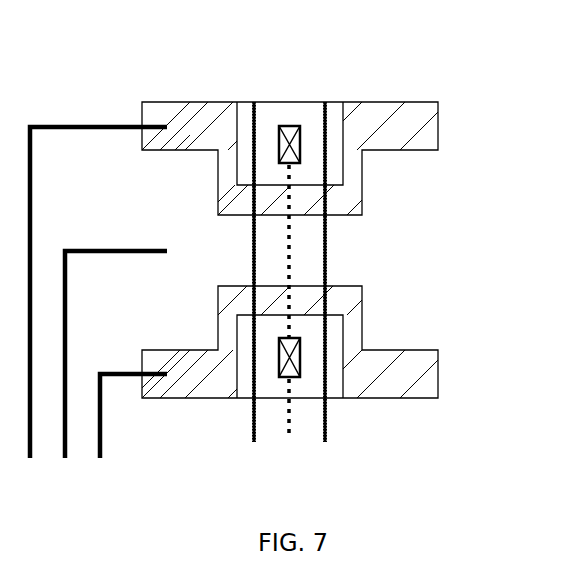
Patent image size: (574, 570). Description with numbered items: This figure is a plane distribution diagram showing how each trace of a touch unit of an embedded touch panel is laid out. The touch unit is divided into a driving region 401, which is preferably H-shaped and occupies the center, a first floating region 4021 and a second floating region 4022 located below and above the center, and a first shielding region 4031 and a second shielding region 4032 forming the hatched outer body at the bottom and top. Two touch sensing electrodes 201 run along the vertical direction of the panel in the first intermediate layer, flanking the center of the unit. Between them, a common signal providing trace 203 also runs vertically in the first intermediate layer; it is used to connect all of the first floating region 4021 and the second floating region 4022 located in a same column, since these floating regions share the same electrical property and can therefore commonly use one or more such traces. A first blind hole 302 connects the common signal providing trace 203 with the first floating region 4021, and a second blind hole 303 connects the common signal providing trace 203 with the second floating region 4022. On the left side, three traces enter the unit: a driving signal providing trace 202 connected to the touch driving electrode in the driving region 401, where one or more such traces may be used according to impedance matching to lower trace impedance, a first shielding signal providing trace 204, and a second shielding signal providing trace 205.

The touch sensing electrode 201 is at (254, 102).
The driving signal providing trace 202 is at (122, 248).
The common signal providing trace 203 is at (286, 440).
The first shielding signal providing trace 204 is at (122, 372).
The second shielding signal providing trace 205 is at (122, 125).
The first blind hole 302 is at (281, 378).
The second blind hole 303 is at (286, 125).
The driving region 401 is at (290, 251).
The first floating region 4021 is at (333, 392).
The second floating region 4022 is at (249, 107).
The first shielding region 4031 is at (427, 380).
The second shielding region 4032 is at (432, 134).